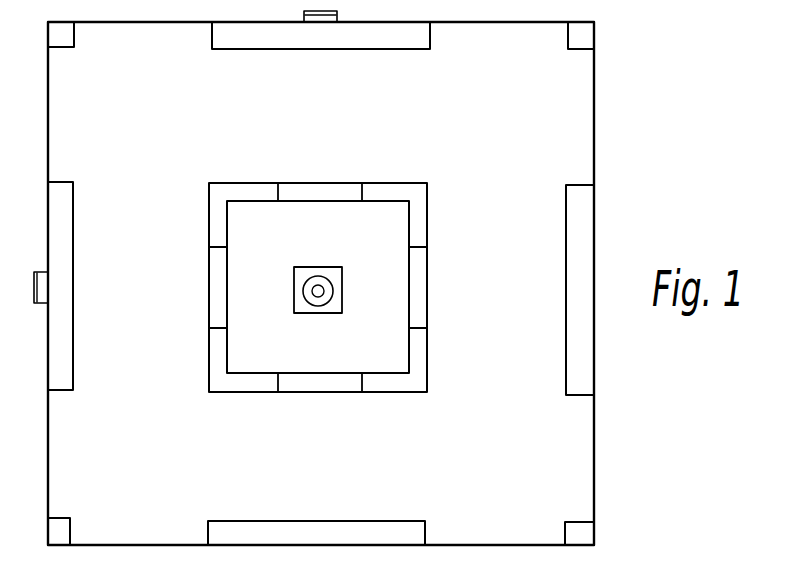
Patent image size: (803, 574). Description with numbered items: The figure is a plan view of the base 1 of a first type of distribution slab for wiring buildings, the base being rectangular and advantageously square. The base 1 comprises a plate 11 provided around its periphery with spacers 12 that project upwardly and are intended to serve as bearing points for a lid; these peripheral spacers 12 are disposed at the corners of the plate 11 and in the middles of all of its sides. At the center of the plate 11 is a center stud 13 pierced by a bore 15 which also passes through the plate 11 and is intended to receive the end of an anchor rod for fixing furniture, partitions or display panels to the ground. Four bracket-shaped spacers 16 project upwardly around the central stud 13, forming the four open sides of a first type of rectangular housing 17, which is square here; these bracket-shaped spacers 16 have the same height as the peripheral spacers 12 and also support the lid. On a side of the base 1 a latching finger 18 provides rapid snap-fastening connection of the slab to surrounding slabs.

The base 1 is at (611, 104).
The plate 11 is at (577, 483).
The peripheral spacers 12 is at (222, 42).
The center stud 13 is at (333, 270).
The bore 15 is at (318, 291).
The bracket-shaped spacers 16 is at (418, 348).
The rectangular housing 17 is at (272, 399).
The latching finger 18 is at (323, 20).